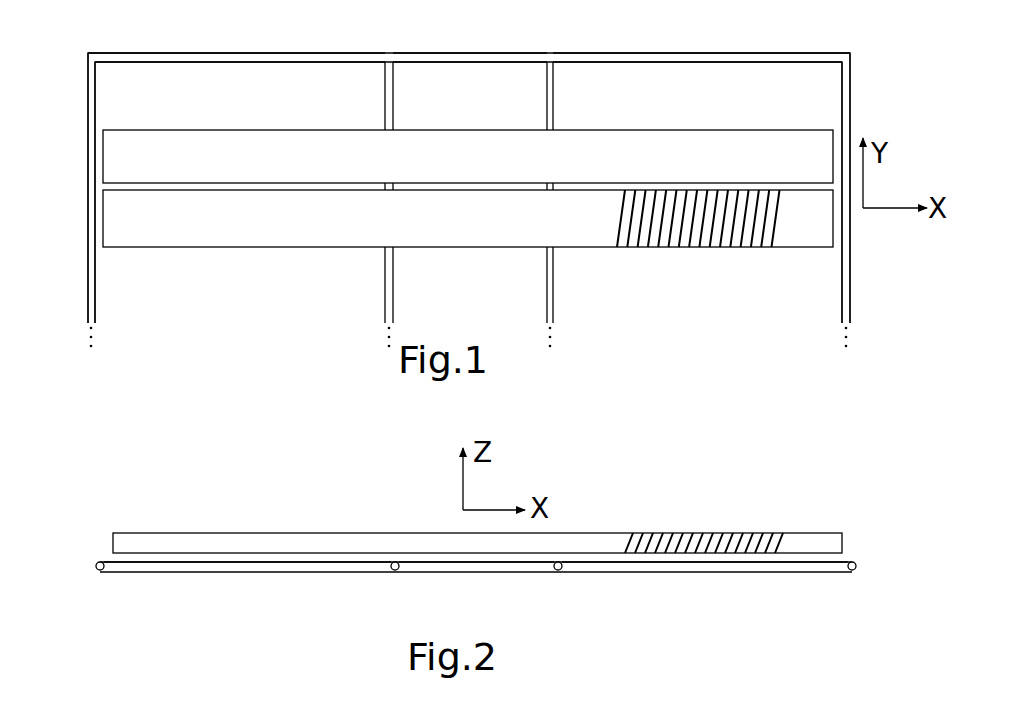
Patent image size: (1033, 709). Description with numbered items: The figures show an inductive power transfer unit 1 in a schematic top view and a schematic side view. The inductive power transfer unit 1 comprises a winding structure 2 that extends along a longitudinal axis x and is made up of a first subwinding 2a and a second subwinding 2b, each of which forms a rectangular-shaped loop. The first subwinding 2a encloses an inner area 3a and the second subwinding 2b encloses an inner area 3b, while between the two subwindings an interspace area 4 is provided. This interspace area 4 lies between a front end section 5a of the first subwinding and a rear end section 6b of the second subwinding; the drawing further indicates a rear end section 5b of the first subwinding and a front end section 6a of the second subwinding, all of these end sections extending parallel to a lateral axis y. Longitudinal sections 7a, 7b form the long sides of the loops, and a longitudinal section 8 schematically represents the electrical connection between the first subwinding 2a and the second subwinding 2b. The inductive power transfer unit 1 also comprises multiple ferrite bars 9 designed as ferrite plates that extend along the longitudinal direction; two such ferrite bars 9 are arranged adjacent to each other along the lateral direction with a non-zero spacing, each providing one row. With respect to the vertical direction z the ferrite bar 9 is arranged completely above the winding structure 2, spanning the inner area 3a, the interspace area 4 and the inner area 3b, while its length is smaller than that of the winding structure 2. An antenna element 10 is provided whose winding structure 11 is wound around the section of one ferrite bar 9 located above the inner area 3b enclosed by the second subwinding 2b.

In FIG. 1, the inductive power transfer unit 1 is at (203, 337).
In FIG. 2, the inductive power transfer unit 1 is at (262, 590).
In FIG. 1, the winding structure 2 is at (88, 203).
In FIG. 2, the winding structure 2 is at (97, 562).
In FIG. 1, the first subwinding 2a is at (323, 57).
In FIG. 1, the second subwinding 2b is at (668, 57).
In FIG. 1, the inner area 3a is at (302, 292).
In FIG. 1, the inner area 3b is at (733, 292).
In FIG. 1, the interspace area 4 is at (470, 292).
In FIG. 1, the front end section of the first subwinding 5a is at (395, 110).
In FIG. 2, the front end section of the first subwinding 5a is at (395, 572).
In FIG. 1, the rear end section of the first subwinding 5b is at (87, 115).
In FIG. 2, the rear end section of the first subwinding 5b is at (100, 572).
In FIG. 1, the front end section of the second subwinding 6a is at (852, 132).
In FIG. 2, the front end section of the second subwinding 6a is at (856, 570).
In FIG. 1, the rear end section of the second subwinding 6b is at (543, 118).
In FIG. 2, the rear end section of the second subwinding 6b is at (560, 571).
In FIG. 1, the longitudinal section 7a is at (245, 57).
In FIG. 2, the longitudinal section 7a is at (326, 573).
In FIG. 1, the longitudinal section 7b is at (620, 57).
In FIG. 2, the longitudinal section 7b is at (690, 569).
In FIG. 1, the longitudinal section 8 is at (458, 57).
In FIG. 2, the longitudinal section 8 is at (478, 566).
In FIG. 1, the ferrite bar 9 is at (698, 143).
In FIG. 2, the ferrite bar 9 is at (573, 543).
In FIG. 1, the antenna element 10 is at (660, 257).
In FIG. 2, the antenna element 10 is at (705, 520).
In FIG. 1, the winding structure of the antenna element 11 is at (770, 247).
In FIG. 2, the winding structure of the antenna element 11 is at (788, 533).